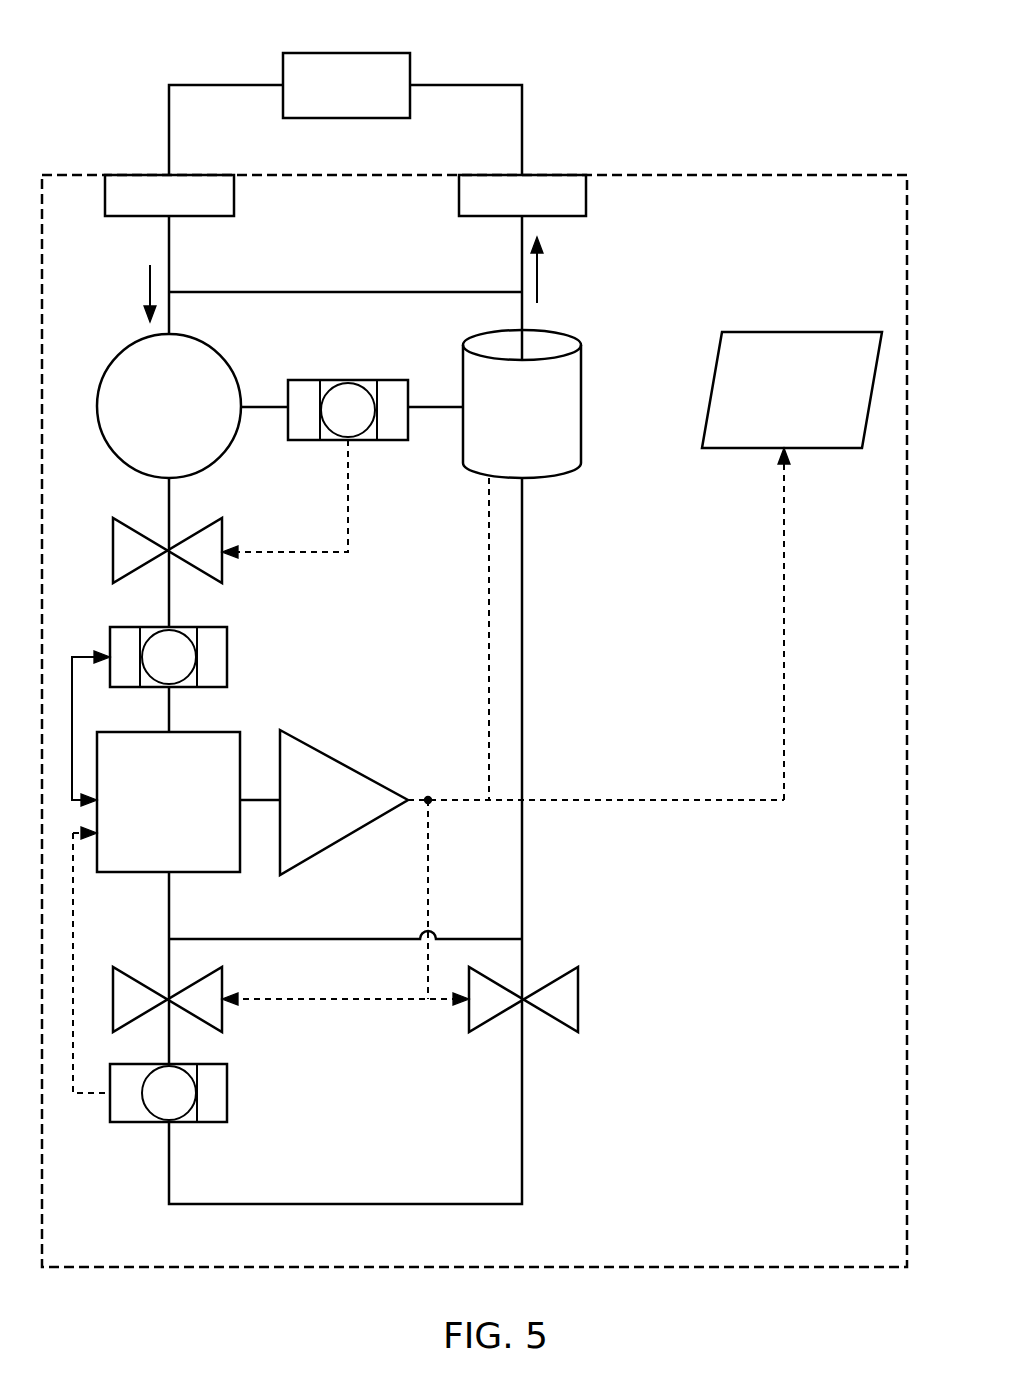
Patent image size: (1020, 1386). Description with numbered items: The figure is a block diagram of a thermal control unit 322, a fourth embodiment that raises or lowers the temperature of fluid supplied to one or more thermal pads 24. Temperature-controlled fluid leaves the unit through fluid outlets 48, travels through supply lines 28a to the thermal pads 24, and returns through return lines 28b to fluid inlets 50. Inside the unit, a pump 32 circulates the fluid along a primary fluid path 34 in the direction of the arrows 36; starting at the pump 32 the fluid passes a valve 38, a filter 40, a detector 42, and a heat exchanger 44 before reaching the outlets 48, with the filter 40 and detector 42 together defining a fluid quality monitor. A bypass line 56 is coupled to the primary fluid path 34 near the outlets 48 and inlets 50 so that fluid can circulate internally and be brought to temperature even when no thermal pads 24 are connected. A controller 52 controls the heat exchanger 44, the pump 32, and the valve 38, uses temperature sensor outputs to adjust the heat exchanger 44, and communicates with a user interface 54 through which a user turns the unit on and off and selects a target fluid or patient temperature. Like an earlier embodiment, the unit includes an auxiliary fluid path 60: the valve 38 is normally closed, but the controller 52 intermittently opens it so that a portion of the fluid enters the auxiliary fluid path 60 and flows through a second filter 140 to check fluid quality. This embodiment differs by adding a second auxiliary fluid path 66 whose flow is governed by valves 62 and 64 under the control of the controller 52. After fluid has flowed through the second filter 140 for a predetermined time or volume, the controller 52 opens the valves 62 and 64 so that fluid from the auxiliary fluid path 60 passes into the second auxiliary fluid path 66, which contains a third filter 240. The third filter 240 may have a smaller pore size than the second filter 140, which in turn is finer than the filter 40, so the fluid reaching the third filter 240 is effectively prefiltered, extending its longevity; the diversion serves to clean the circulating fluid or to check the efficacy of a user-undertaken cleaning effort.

The thermal pad 24 is at (338, 53).
The supply line 28a is at (466, 85).
The return line 28b is at (205, 85).
The thermal control unit 322 is at (682, 175).
The fluid inlet 50 is at (234, 200).
The fluid outlet 48 is at (586, 197).
The primary fluid path 34 is at (169, 258).
The arrow 36 is at (150, 287).
The bypass line 56 is at (340, 292).
The pump 32 is at (226, 358).
The filter 40 is at (328, 380).
The heat exchanger 44 is at (572, 400).
The user interface 54 is at (782, 332).
The valve 38 is at (222, 535).
The auxiliary fluid path 60 is at (169, 597).
The second filter 140 is at (227, 665).
The detector 42 is at (200, 730).
The controller 52 is at (320, 752).
The valve 62 is at (222, 978).
The valve 64 is at (578, 993).
The second auxiliary fluid path 66 is at (169, 1043).
The third filter 240 is at (227, 1093).